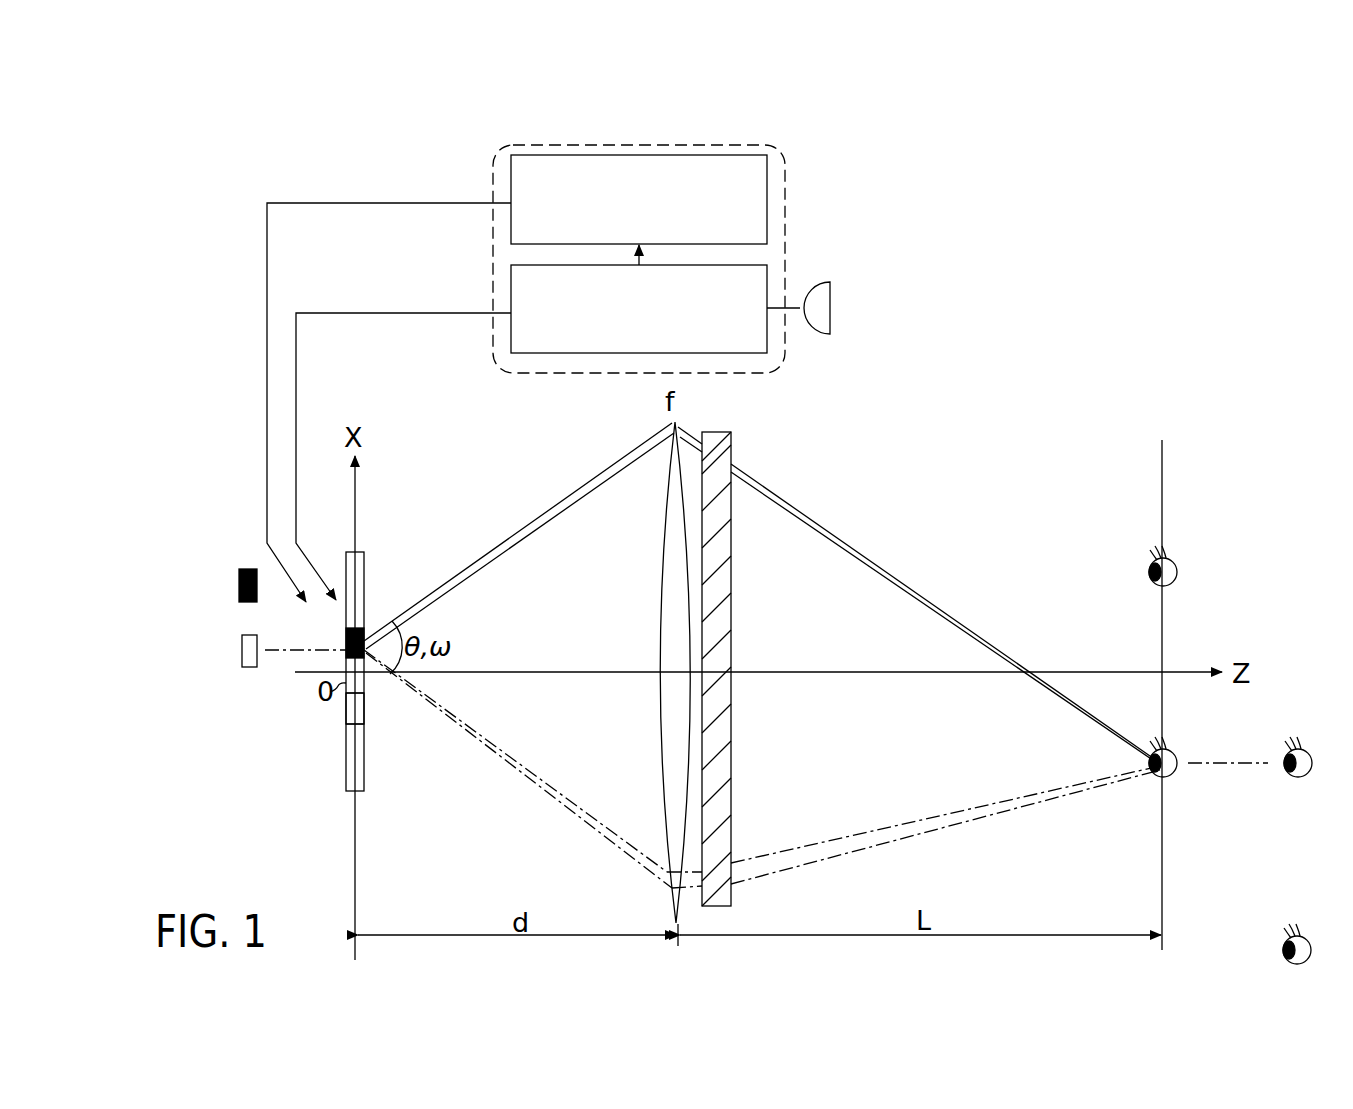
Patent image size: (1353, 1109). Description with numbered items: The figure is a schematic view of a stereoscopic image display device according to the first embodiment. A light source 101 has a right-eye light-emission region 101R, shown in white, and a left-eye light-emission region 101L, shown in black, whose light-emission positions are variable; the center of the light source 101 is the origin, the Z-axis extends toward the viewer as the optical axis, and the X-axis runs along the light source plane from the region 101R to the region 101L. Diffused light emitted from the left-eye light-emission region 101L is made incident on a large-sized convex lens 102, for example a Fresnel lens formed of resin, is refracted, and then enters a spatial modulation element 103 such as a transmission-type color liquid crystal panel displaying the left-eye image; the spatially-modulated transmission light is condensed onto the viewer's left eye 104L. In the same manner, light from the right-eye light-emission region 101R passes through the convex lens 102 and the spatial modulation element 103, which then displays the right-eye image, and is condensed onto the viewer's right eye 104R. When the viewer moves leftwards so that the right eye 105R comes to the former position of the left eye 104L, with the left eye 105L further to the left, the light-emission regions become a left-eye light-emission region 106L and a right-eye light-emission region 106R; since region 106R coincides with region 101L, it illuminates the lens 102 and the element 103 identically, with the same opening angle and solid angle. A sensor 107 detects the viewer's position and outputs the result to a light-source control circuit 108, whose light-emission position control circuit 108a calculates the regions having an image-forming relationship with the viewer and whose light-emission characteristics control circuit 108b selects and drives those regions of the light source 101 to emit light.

The light source 101 is at (364, 566).
The left-eye light-emission region 101L is at (346, 643).
The right-eye light-emission region 101R is at (346, 708).
The convex lens 102 is at (662, 478).
The spatial modulation element 103 is at (731, 441).
The left eye 104L is at (1195, 749).
The right eye 104R is at (1196, 557).
The left eye 105L is at (1303, 928).
The right eye 105R is at (1307, 742).
The left-eye light-emission region 106L is at (246, 570).
The right-eye light-emission region 106R is at (250, 668).
The sensor 107 is at (830, 293).
The light-source control circuit 108 is at (641, 259).
The light-emission position control circuit 108a is at (511, 338).
The light-emission characteristics control circuit 108b is at (511, 228).